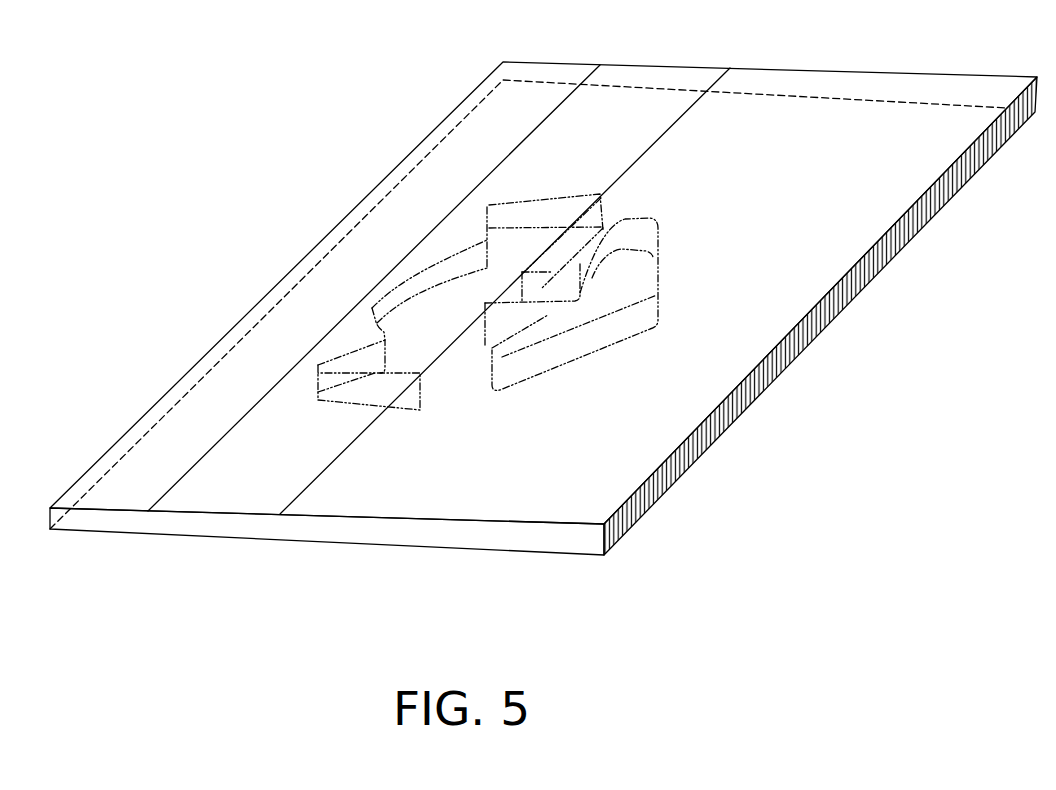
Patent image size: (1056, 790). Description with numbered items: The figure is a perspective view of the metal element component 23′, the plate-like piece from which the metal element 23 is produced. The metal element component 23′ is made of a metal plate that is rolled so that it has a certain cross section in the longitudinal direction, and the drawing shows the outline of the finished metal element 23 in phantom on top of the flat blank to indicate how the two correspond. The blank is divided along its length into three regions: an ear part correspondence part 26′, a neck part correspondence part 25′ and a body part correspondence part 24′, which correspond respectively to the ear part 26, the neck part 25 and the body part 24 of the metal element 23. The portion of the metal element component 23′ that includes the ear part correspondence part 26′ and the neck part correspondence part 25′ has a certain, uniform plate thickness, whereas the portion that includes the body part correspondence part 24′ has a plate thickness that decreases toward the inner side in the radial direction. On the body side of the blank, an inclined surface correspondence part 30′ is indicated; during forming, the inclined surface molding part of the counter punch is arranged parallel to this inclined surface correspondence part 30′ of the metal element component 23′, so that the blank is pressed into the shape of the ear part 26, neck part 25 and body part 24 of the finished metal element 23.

The metal element component 23′ is at (543, 311).
The body part correspondence part 24′ is at (189, 532).
The neck part correspondence part 25′ is at (307, 530).
The ear part correspondence part 26′ is at (477, 543).
The inclined surface correspondence part 30′ is at (237, 453).
The metal element 23 is at (537, 274).
The body part 24 is at (573, 196).
The neck part 25 is at (608, 203).
The ear part 26 is at (661, 282).